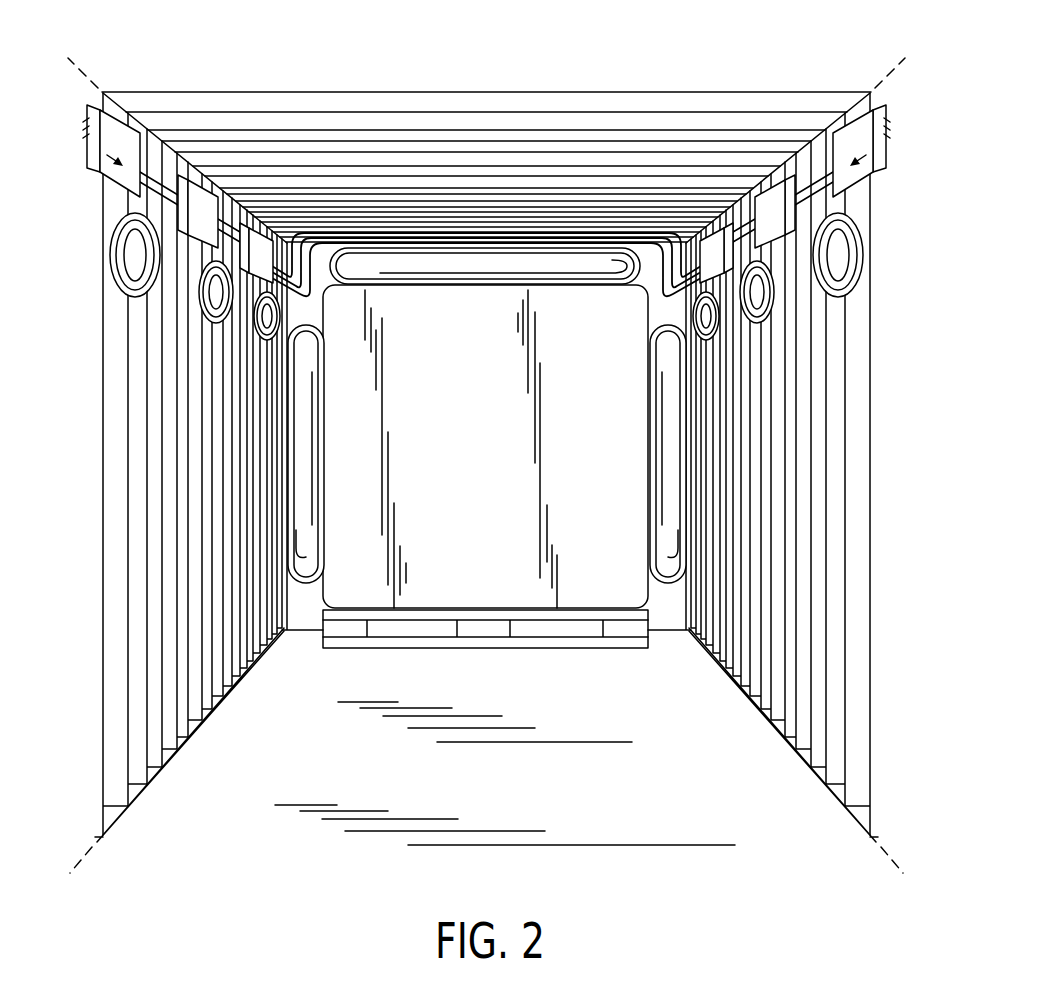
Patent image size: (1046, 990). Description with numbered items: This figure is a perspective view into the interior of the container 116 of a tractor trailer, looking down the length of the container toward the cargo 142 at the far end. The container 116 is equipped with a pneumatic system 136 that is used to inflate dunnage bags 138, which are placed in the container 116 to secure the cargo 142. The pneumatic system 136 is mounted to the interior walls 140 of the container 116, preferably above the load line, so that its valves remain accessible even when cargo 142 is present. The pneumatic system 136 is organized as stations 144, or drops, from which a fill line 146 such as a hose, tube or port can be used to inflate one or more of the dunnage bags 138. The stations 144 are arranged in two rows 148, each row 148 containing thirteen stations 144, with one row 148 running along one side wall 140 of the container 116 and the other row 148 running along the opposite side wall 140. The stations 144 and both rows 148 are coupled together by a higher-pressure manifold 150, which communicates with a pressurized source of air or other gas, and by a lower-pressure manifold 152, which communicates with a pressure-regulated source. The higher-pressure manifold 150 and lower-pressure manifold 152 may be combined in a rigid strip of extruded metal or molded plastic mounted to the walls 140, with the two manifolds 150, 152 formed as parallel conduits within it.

The container 116 is at (541, 68).
The pneumatic system 136 is at (757, 203).
The dunnage bag 138 is at (322, 405).
The interior wall 140 is at (200, 688).
The cargo 142 is at (494, 466).
The station 144 is at (133, 150).
The fill line 146 is at (200, 300).
The row 148 is at (104, 150).
The higher-pressure manifold 150 is at (280, 250).
The lower-pressure manifold 152 is at (330, 245).